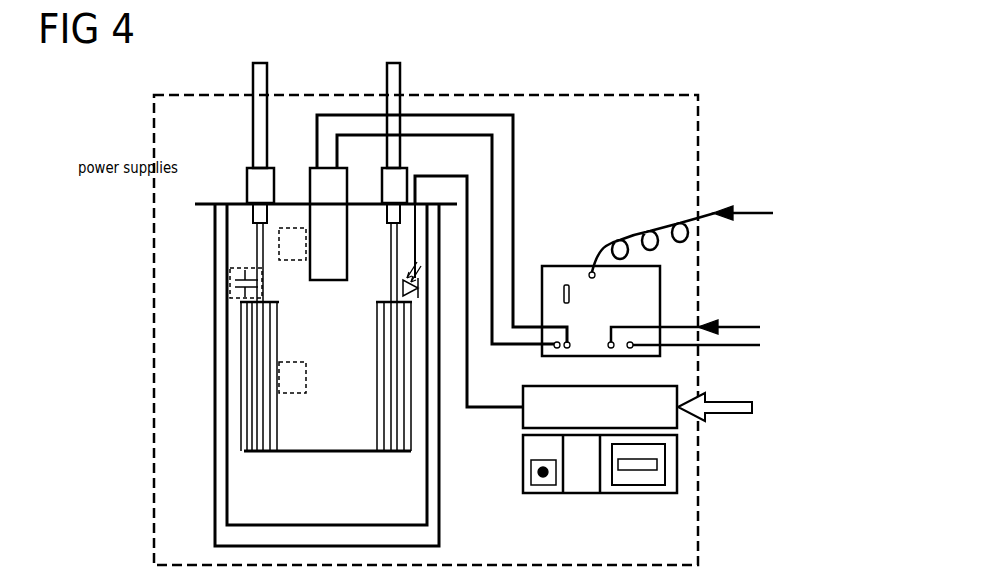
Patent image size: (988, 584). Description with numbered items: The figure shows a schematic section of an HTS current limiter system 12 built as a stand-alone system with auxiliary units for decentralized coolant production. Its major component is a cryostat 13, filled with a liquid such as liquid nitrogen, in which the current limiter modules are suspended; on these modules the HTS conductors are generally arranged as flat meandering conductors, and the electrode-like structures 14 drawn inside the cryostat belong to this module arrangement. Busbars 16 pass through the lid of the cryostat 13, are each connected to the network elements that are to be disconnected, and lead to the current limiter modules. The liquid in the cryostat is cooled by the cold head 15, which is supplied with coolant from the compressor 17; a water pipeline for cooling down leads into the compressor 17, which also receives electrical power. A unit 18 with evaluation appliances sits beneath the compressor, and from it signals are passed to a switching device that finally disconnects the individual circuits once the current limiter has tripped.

The HTS current limiter system 12 is at (690, 145).
The cryostat 13 is at (433, 493).
The electrodes 14 is at (396, 444).
The cold head 15 is at (331, 182).
The busbars 16 is at (395, 78).
The compressor 17 is at (567, 275).
The unit with evaluation appliances 18 is at (579, 485).